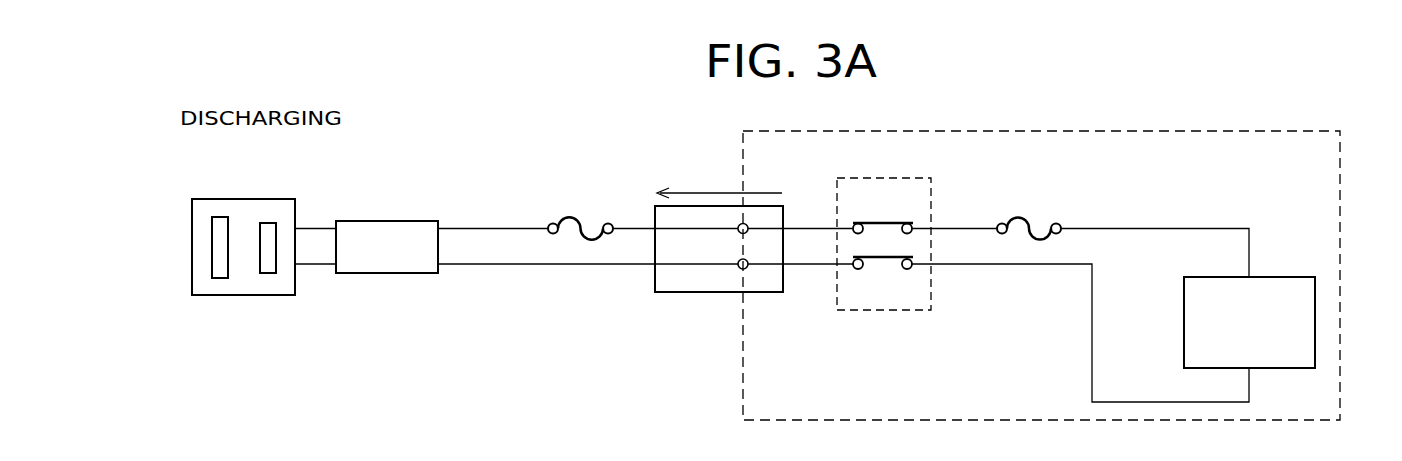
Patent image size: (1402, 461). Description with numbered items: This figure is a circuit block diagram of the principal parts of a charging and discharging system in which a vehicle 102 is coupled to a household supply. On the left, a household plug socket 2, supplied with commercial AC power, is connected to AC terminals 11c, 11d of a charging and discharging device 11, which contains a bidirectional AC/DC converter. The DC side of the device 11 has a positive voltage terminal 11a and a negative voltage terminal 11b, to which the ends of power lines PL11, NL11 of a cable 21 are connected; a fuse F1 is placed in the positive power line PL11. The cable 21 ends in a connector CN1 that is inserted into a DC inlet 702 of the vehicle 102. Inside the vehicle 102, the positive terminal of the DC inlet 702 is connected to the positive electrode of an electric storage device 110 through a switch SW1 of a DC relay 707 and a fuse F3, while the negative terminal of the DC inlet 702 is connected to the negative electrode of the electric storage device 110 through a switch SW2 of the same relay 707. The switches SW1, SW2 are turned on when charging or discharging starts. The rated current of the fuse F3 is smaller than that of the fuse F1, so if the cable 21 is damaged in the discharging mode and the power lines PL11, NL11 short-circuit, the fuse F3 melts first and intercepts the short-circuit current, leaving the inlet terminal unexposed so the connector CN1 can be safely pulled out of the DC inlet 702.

The household plug socket 2 is at (258, 199).
The charging and discharging device 11 is at (391, 221).
The positive voltage terminal 11a is at (437, 221).
The negative voltage terminal 11b is at (437, 273).
The AC terminal 11c is at (336, 221).
The AC terminal 11d is at (336, 273).
The cable 21 is at (737, 167).
The power line PL11 is at (498, 228).
The power line NL11 is at (498, 265).
The fuse F1 is at (567, 217).
The connector CN1 is at (697, 293).
The DC inlet 702 is at (768, 293).
The vehicle 102 is at (1187, 132).
The DC relay 707 is at (877, 177).
The switch SW1 is at (885, 222).
The switch SW2 is at (885, 259).
The fuse F3 is at (1016, 217).
The electric storage device 110 is at (1281, 277).